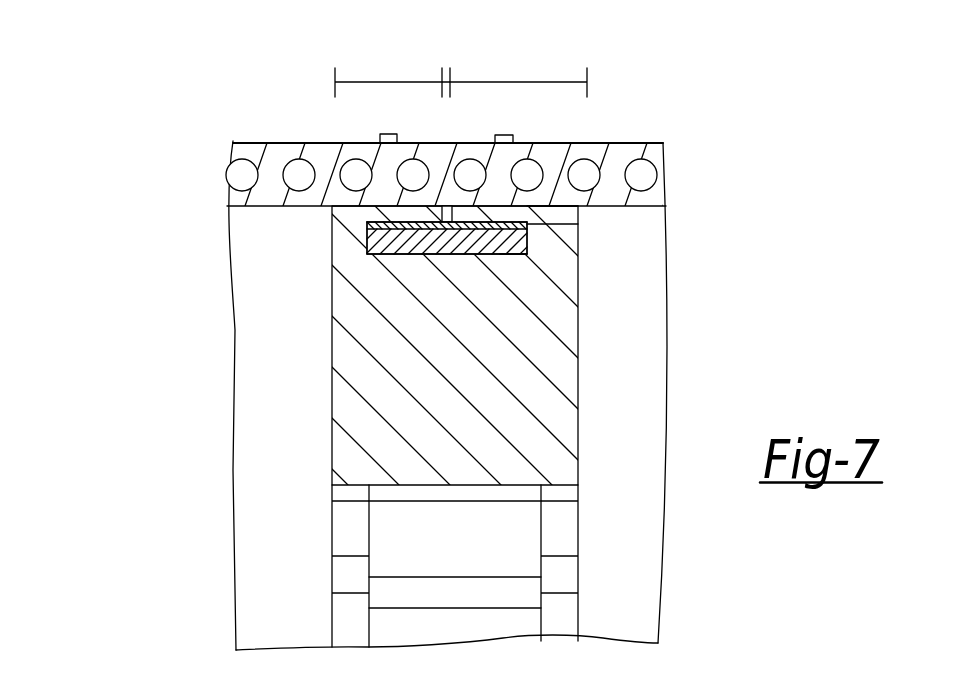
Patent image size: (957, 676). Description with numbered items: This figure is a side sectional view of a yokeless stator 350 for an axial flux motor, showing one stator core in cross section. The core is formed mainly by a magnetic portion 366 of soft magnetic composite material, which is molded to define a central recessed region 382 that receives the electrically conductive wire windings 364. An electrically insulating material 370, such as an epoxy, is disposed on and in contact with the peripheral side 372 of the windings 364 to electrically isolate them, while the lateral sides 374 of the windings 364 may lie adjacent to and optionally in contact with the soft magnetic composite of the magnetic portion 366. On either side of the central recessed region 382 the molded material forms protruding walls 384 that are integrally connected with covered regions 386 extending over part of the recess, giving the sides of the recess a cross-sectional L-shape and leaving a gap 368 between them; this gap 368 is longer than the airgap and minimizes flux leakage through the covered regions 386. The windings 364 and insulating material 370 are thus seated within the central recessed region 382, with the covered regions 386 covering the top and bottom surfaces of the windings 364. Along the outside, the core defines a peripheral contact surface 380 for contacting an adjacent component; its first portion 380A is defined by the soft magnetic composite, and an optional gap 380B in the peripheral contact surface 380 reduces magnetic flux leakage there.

The stator 350 is at (165, 132).
The electrically conductive wire windings 364 is at (418, 257).
The magnetic portion 366 is at (562, 375).
The gap 368 is at (450, 207).
The electrically insulating material 370 is at (550, 228).
The peripheral side 372 is at (512, 233).
The lateral sides 374 is at (367, 244).
The peripheral contact surface 380 is at (483, 216).
The first portion of the peripheral contact surface 380A is at (355, 80).
The gap 380B is at (447, 68).
The central recessed region 382 is at (393, 256).
The protruding walls 384 is at (564, 216).
The covered regions 386 is at (389, 222).